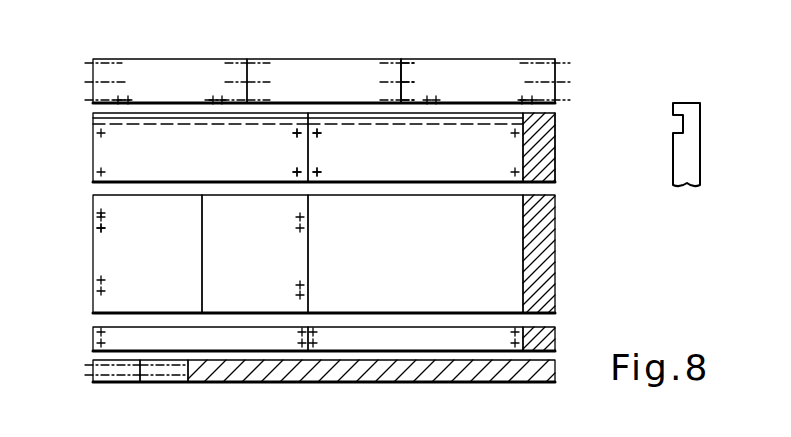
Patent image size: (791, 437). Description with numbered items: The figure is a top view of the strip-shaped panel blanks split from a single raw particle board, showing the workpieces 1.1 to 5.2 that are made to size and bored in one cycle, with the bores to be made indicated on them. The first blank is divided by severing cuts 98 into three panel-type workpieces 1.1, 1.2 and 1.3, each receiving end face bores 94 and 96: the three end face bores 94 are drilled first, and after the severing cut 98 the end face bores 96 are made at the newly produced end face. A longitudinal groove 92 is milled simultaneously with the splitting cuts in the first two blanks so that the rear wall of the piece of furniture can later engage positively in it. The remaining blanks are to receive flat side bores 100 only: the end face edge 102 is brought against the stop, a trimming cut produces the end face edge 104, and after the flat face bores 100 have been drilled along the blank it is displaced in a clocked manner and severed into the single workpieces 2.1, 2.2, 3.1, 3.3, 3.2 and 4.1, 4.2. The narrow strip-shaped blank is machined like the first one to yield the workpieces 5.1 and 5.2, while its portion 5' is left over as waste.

The workpiece 1.1 is at (166, 81).
The workpiece 1.2 is at (324, 81).
The workpiece 1.3 is at (485, 81).
The workpiece 2.1 is at (200, 147).
The workpiece 2.2 is at (415, 147).
The workpiece 3.1 is at (147, 254).
The workpiece 3.2 is at (431, 254).
The workpiece 3.3 is at (255, 254).
The workpiece 4.1 is at (176, 338).
The workpiece 4.2 is at (376, 337).
The workpiece 5.1 is at (123, 372).
The workpiece 5.2 is at (163, 371).
The portion of the panel blank 5' is at (371, 391).
The longitudinal groove 92 is at (679, 123).
The end face bores 94 is at (553, 100).
The end face bores 96 is at (404, 100).
The severing cut 98 is at (402, 58).
The flat side bores 100 is at (317, 172).
The end face edge 102 is at (559, 162).
The end face edge 104 is at (556, 184).